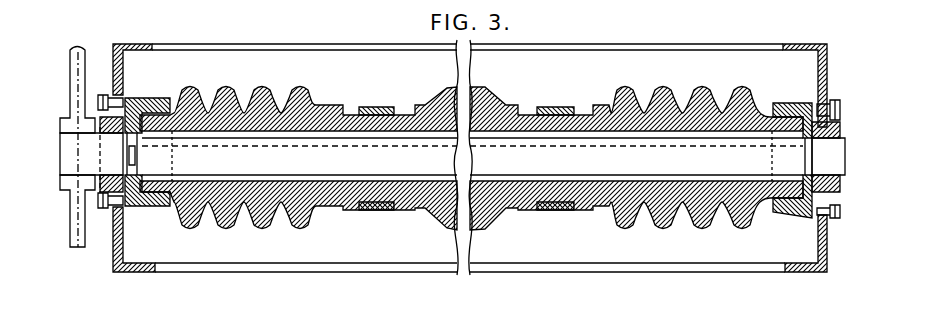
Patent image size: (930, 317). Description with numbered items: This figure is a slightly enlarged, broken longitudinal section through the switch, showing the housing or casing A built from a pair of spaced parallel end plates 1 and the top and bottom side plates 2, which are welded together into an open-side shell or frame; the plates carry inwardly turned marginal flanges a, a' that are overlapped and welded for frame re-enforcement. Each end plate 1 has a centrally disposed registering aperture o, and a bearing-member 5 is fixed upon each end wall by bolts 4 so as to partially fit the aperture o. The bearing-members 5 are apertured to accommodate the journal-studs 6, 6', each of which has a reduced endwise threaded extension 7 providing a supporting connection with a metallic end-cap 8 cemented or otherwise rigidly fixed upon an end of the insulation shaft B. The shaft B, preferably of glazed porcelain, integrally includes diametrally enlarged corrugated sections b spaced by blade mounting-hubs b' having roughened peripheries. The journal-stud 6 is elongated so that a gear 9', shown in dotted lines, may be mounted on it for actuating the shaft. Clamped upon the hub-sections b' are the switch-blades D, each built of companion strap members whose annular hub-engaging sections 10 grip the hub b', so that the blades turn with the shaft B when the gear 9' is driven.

The housing A is at (113, 44).
The end plate 1 is at (827, 45).
The side plate 2 is at (534, 256).
The marginal flange a is at (462, 156).
The marginal flange a' is at (462, 156).
The bolt 4 is at (100, 95).
The bearing-member 5 is at (99, 200).
The journal-stud 6 is at (91, 155).
The journal-stud 6' is at (828, 157).
The threaded extension 7 is at (142, 155).
The end-cap 8 is at (142, 207).
The gear 9' is at (77, 165).
The hub-engaging section 10 is at (377, 107).
The aperture o is at (138, 106).
The insulation shaft B is at (306, 96).
The switch-blade D is at (355, 210).
The corrugated section b is at (455, 157).
The blade mounting-hub b' is at (498, 90).